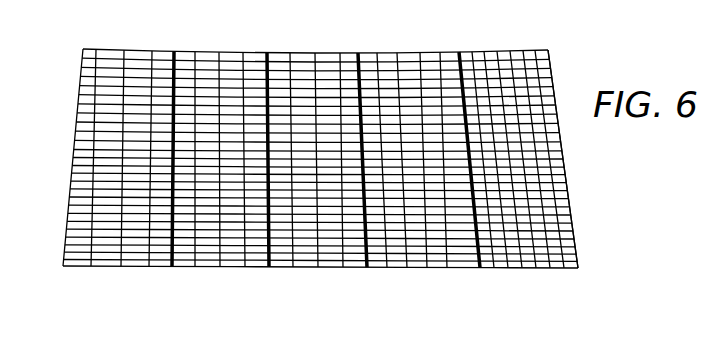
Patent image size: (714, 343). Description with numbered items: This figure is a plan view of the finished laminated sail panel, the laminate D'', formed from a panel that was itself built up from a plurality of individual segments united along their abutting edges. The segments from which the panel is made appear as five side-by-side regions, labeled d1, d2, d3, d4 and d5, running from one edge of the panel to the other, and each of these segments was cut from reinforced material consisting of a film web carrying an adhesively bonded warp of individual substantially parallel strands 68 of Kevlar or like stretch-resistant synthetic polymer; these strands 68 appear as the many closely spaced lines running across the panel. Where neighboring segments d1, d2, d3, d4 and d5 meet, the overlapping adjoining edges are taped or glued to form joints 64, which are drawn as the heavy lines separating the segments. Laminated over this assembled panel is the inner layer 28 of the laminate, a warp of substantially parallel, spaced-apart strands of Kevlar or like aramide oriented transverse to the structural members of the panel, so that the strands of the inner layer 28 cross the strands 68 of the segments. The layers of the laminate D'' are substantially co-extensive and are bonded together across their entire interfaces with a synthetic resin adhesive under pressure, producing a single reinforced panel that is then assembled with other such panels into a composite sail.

The inner layer 28 is at (85, 138).
The warp of individual substantially parallel strands 68 is at (137, 70).
The joints 64 is at (182, 68).
The first wire spacing d1 is at (133, 238).
The second wire spacing d2 is at (233, 233).
The third wire spacing d3 is at (332, 234).
The fourth wire spacing d4 is at (438, 243).
The fifth wire spacing d5 is at (540, 243).
The laminate D'' is at (587, 159).